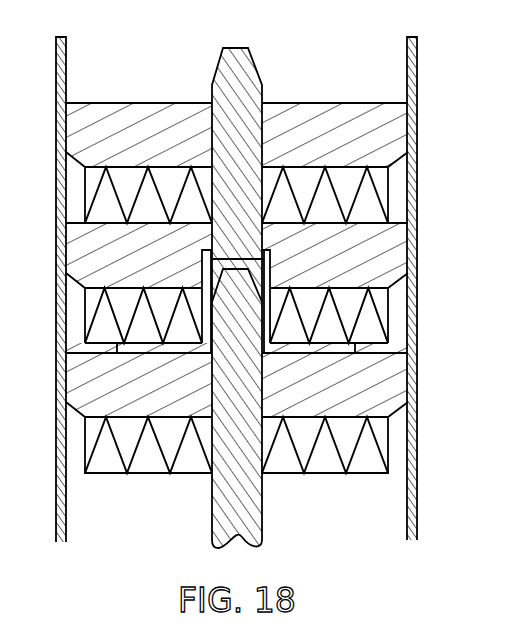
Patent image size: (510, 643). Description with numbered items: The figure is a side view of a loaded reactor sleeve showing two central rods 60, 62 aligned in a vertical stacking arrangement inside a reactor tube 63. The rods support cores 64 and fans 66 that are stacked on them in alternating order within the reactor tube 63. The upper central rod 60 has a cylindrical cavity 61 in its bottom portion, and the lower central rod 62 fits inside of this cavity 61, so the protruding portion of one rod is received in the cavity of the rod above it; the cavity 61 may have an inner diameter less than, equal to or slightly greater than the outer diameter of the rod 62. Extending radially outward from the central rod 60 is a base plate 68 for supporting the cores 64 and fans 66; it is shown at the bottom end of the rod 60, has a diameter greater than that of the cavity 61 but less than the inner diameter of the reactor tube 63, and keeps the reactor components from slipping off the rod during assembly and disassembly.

The central rod 60 is at (222, 72).
The cylindrical cavity 61 is at (256, 270).
The central rod 62 is at (262, 505).
The reactor tube 63 is at (417, 66).
The core 64 is at (393, 130).
The fan 66 is at (368, 202).
The base plate 68 is at (355, 348).